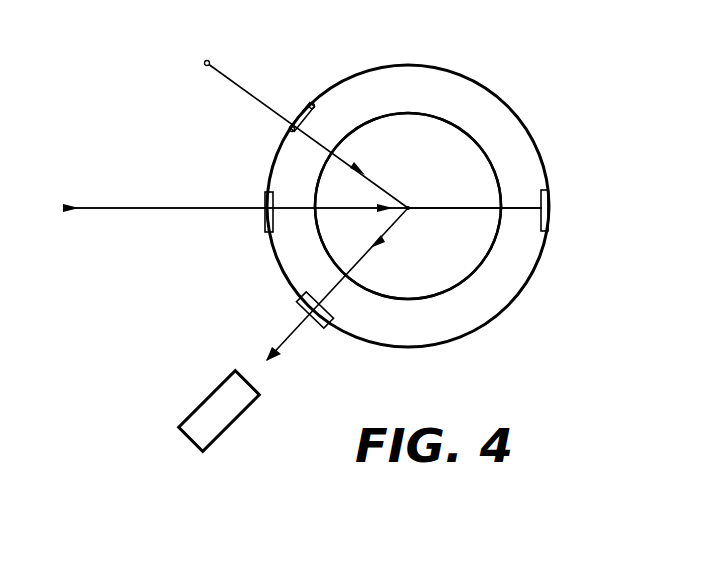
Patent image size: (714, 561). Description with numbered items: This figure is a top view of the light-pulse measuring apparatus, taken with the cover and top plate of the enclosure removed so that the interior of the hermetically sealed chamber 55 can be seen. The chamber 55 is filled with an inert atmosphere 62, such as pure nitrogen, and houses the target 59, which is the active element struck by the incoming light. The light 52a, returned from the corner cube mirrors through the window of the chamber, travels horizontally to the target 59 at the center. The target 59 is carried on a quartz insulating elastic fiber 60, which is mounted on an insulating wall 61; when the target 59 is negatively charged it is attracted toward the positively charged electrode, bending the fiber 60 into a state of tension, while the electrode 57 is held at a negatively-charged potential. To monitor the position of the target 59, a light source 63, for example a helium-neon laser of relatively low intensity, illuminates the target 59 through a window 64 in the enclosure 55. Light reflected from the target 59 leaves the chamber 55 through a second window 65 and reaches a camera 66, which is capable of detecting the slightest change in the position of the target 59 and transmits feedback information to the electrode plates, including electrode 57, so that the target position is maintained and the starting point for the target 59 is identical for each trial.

The reflected light 52a is at (110, 209).
The hermetically sealed chamber 55 is at (479, 72).
The electrode 57 is at (432, 118).
The target 59 is at (409, 206).
The quartz insulating elastic fiber 60 is at (468, 211).
The insulating wall 61 is at (548, 208).
The inert atmosphere 62 is at (415, 332).
The light source 63 is at (198, 42).
The window 64 is at (306, 104).
The second window 65 is at (297, 307).
The camera 66 is at (232, 428).